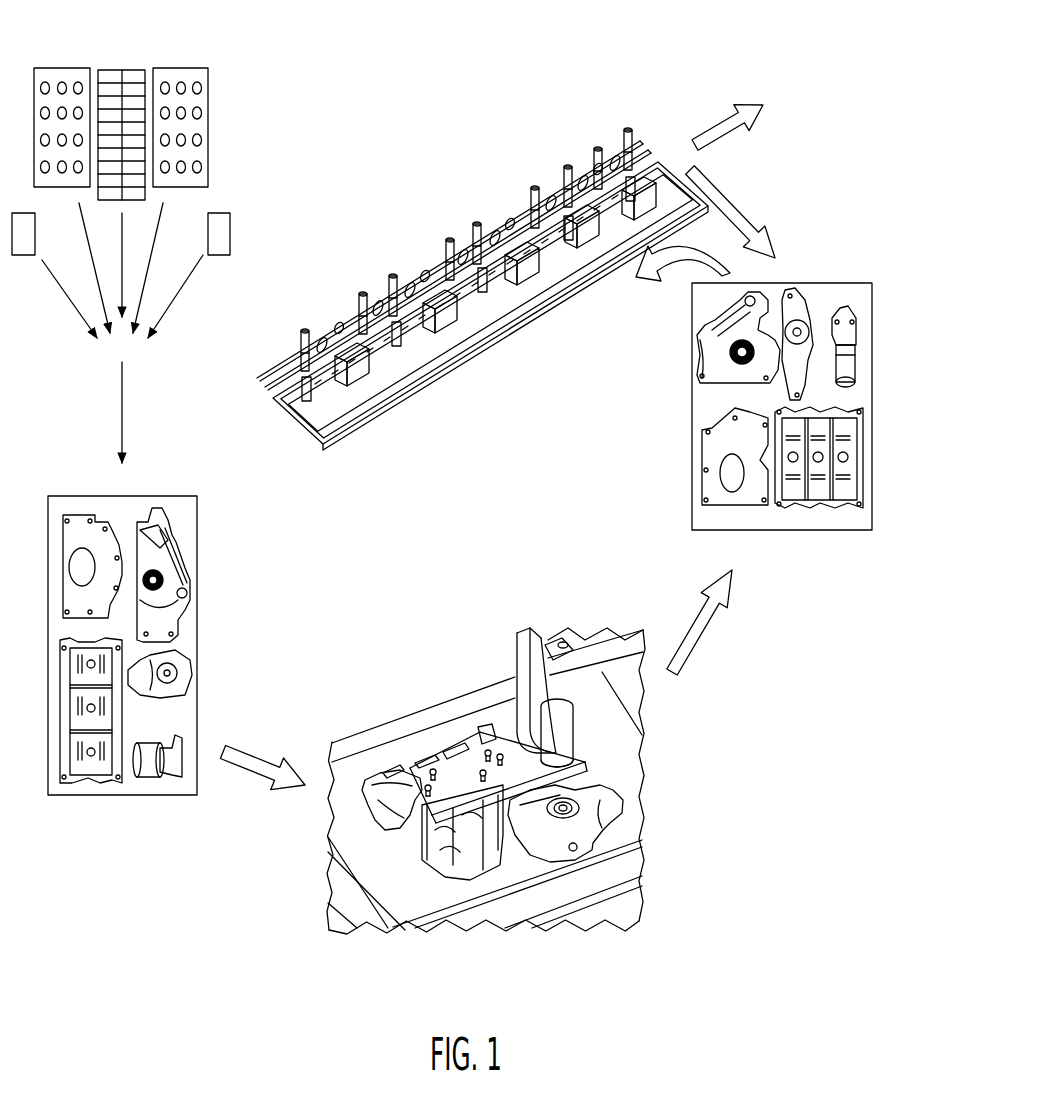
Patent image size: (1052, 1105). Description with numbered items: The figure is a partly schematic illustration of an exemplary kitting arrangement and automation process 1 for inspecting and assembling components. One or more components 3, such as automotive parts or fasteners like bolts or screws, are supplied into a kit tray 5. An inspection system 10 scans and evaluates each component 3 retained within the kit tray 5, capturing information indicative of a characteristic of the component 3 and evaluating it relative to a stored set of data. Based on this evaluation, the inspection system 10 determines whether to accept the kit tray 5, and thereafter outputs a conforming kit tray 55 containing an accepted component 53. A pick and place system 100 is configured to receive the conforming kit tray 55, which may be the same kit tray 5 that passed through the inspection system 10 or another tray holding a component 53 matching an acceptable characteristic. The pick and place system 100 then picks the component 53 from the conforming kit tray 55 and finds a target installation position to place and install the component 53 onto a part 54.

The kitting arrangement and automation process 1 is at (575, 395).
The component 3 is at (159, 293).
The kit tray 5 is at (122, 725).
The inspection system 10 is at (541, 781).
The component 53 is at (812, 341).
The part 54 is at (851, 438).
The conforming kit tray 55 is at (810, 478).
The pick and place system 100 is at (482, 229).